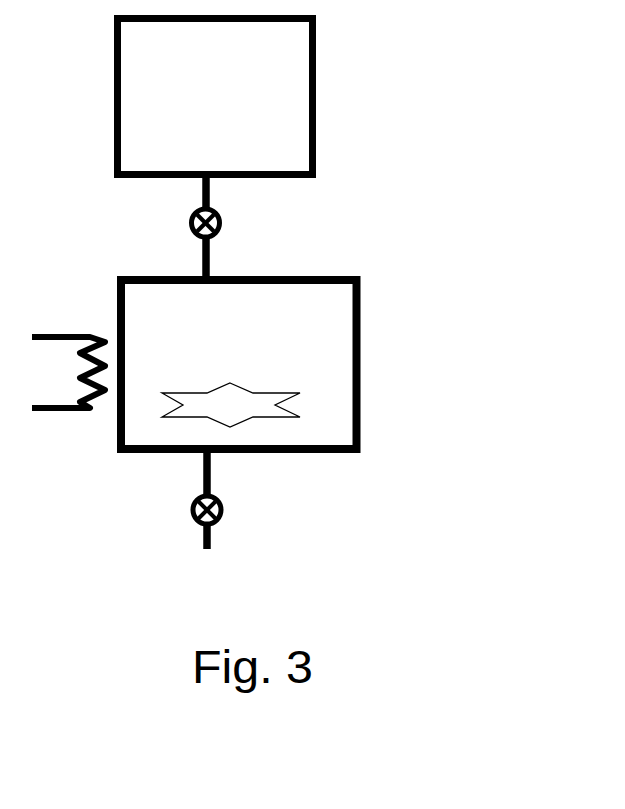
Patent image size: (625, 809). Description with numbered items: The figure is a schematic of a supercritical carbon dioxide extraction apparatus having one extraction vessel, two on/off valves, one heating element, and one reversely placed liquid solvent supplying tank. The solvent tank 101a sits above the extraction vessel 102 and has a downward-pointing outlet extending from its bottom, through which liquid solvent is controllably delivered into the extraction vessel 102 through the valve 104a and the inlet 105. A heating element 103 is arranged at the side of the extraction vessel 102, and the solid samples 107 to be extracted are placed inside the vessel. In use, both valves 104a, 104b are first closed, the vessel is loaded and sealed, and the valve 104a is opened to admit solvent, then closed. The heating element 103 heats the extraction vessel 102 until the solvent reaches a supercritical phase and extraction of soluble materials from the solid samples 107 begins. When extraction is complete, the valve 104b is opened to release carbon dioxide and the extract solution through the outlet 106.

The solvent tank 101a is at (215, 97).
The extraction vessel 102 is at (239, 364).
The heating element 103 is at (68, 372).
The valve 104a is at (235, 223).
The valve 104b is at (180, 508).
The inlet 105 is at (218, 258).
The outlet 106 is at (227, 473).
The solid samples 107 is at (313, 412).